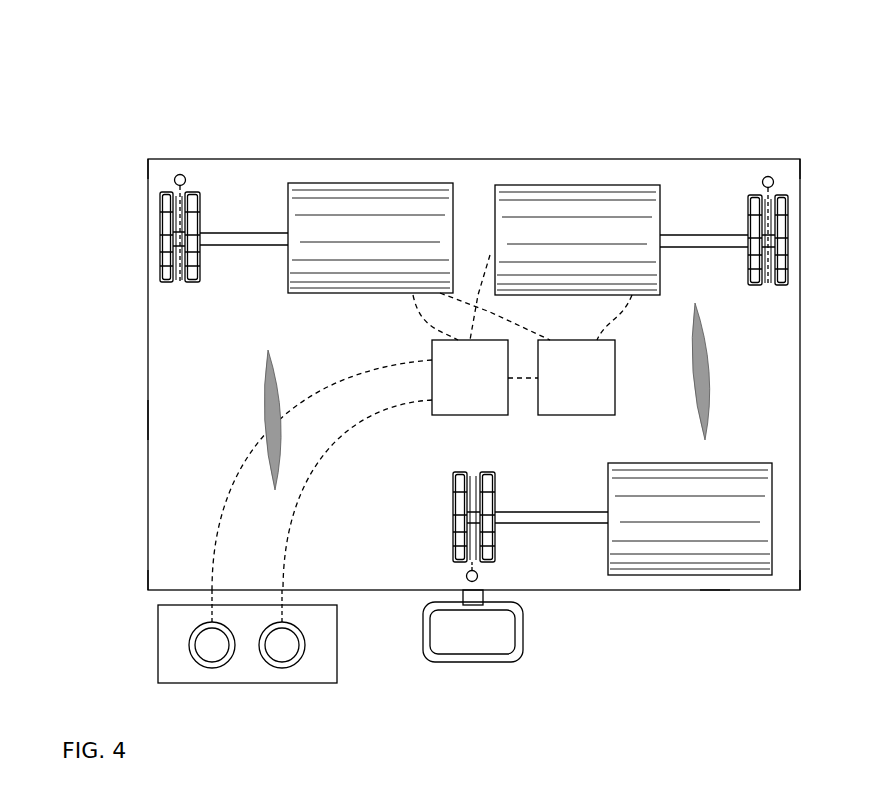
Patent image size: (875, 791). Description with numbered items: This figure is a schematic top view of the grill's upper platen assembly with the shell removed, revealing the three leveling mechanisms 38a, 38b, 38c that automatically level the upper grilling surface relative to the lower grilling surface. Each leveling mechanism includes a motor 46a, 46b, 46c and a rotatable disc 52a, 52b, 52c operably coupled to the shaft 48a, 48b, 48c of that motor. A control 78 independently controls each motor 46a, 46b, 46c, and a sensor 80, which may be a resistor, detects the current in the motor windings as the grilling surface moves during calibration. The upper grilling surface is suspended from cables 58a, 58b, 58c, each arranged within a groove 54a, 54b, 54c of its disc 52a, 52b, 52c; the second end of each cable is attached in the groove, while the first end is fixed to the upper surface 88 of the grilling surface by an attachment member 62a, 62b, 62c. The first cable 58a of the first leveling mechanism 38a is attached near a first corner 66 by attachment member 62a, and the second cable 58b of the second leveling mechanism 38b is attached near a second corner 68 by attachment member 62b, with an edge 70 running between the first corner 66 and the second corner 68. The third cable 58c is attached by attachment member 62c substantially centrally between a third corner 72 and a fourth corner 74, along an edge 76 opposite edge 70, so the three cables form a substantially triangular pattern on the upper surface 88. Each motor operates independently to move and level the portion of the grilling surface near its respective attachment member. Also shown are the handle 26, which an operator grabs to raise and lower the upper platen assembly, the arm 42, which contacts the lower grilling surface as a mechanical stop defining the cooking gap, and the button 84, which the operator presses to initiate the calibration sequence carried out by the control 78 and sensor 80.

The handle 26 is at (430, 660).
The first leveling mechanism 38a is at (265, 165).
The second leveling mechanism 38b is at (688, 168).
The third leveling mechanism 38c is at (588, 566).
The arm 42 is at (472, 598).
The first motor 46a is at (372, 188).
The second motor 46b is at (583, 190).
The third motor 46c is at (762, 536).
The first motor shaft 48a is at (252, 232).
The second motor shaft 48b is at (720, 238).
The third motor shaft 48c is at (554, 512).
The first disc 52a is at (163, 222).
The second disc 52b is at (790, 228).
The third disc 52c is at (456, 496).
The first groove 54a is at (180, 278).
The second groove 54b is at (768, 286).
The third groove 54c is at (473, 472).
The first cable 58a is at (178, 247).
The second cable 58b is at (770, 245).
The third cable 58c is at (471, 529).
The first attachment member 62a is at (180, 174).
The second attachment member 62b is at (774, 182).
The third attachment member 62c is at (480, 572).
The first corner 66 is at (148, 159).
The second corner 68 is at (800, 159).
The edge 70 is at (462, 159).
The third corner 72 is at (148, 590).
The fourth corner 74 is at (800, 590).
The opposite edge 76 is at (722, 590).
The control 78 is at (470, 377).
The sensor 80 is at (576, 377).
The button 84 is at (210, 668).
The upper surface 88 is at (148, 420).